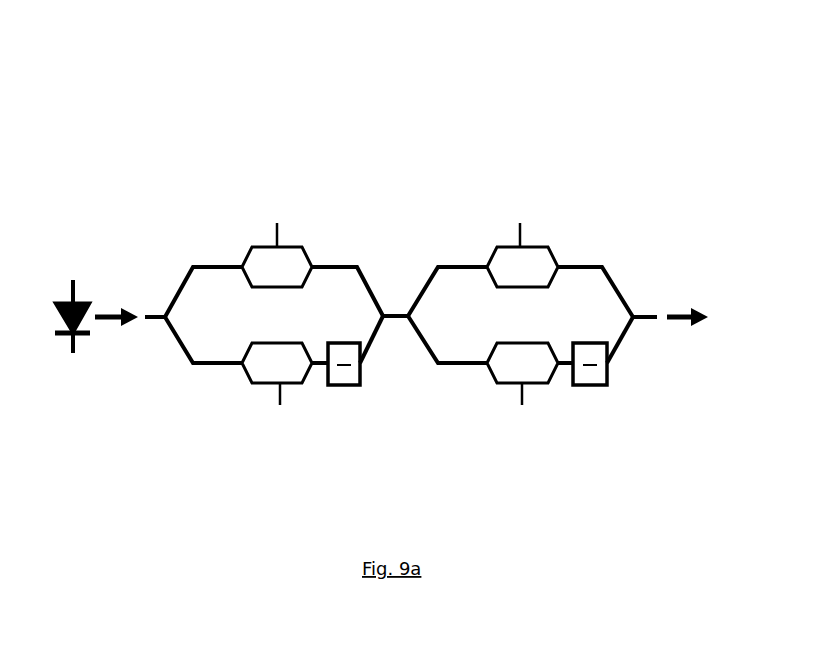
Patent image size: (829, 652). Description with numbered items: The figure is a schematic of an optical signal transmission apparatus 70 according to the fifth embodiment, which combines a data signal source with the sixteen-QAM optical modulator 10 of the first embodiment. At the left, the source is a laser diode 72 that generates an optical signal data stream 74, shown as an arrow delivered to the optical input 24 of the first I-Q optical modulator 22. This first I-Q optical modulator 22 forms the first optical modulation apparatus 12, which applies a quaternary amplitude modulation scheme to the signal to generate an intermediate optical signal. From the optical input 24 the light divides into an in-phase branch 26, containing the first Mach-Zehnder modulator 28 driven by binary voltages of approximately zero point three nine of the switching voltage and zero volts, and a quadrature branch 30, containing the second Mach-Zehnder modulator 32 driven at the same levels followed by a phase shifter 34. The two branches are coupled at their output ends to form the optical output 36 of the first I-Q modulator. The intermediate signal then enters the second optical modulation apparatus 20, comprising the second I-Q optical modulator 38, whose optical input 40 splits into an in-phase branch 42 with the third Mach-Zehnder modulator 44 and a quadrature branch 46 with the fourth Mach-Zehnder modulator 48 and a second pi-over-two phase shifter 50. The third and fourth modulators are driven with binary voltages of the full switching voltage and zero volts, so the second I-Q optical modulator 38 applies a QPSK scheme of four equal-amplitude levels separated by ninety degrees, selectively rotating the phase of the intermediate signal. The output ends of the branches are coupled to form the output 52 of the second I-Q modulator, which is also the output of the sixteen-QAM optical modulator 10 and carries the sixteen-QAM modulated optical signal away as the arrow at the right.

The optical signal transmission apparatus 70 is at (433, 72).
The laser diode 72 is at (53, 357).
The optical signal data stream 74 is at (110, 323).
The 16-QAM optical modulator 10 is at (400, 180).
The first optical modulation apparatus 12 is at (224, 453).
The second optical modulation apparatus 20 is at (568, 438).
The I-Q optical modulator 22 is at (181, 215).
The optical input 24 is at (155, 322).
The in-phase branch 26 is at (180, 277).
The first Mach-Zehnder modulator 28 is at (297, 238).
The quadrature branch 30 is at (178, 365).
The second Mach-Zehnder modulator 32 is at (297, 393).
The phase shifter 34 is at (365, 386).
The optical output 36 is at (390, 313).
The second I-Q optical modulator 38 is at (636, 234).
The optical input 40 is at (403, 320).
The in-phase branch 42 is at (439, 246).
The third Mach-Zehnder modulator 44 is at (547, 238).
The quadrature branch 46 is at (441, 375).
The fourth Mach-Zehnder modulator 48 is at (537, 391).
The second π/2 phase shifter 50 is at (607, 386).
The output 52 is at (645, 316).